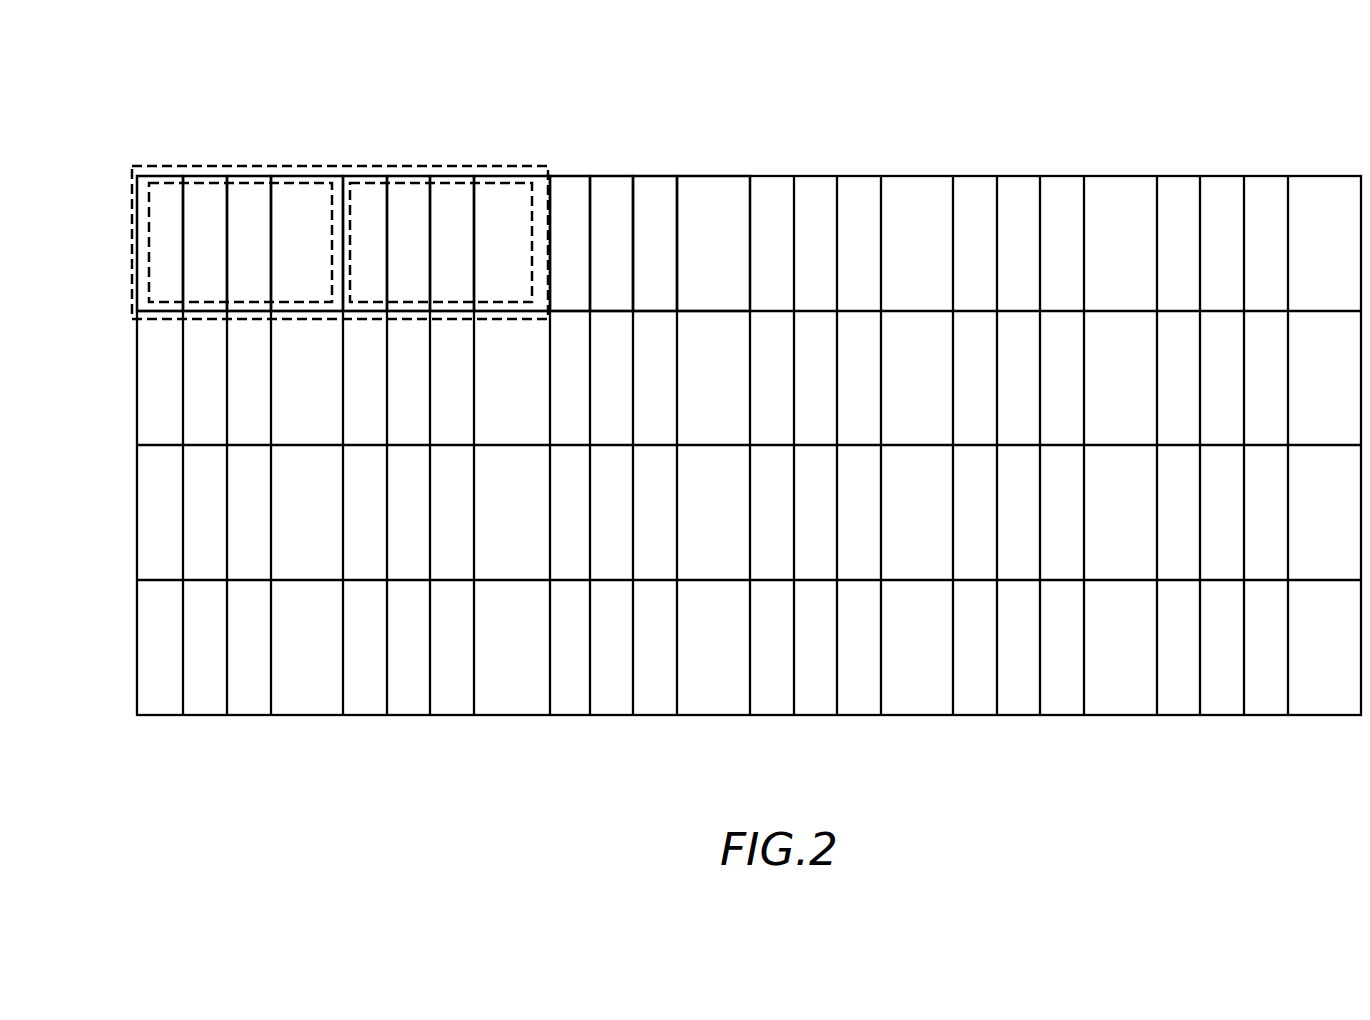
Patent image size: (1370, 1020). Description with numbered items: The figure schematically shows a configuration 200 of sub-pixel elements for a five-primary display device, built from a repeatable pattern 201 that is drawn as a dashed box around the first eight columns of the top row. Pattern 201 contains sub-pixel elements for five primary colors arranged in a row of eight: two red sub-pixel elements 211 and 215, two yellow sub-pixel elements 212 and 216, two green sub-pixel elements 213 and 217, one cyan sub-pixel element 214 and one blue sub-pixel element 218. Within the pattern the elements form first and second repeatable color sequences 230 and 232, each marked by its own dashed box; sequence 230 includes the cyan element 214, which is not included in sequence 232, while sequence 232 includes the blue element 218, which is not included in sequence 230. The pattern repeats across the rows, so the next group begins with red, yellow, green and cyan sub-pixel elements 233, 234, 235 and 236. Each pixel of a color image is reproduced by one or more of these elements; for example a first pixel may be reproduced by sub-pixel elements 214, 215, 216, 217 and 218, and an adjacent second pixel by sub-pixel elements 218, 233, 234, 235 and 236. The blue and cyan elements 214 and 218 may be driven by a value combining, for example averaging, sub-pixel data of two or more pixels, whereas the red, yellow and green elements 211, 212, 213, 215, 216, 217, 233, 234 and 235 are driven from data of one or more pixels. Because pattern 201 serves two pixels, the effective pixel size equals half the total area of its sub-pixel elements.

The configuration of sub-pixel elements 200 is at (298, 777).
The repeatable pattern 201 is at (132, 230).
The first repeatable color sequence 230 is at (313, 183).
The second repeatable color sequence 232 is at (522, 182).
The sub-pixel element 211 is at (157, 202).
The sub-pixel element 212 is at (202, 202).
The sub-pixel element 213 is at (242, 202).
The sub-pixel element 214 is at (288, 202).
The sub-pixel element 215 is at (358, 202).
The sub-pixel element 216 is at (403, 202).
The sub-pixel element 217 is at (443, 202).
The sub-pixel element 218 is at (493, 202).
The sub-pixel element 233 is at (562, 202).
The sub-pixel element 234 is at (607, 202).
The sub-pixel element 235 is at (648, 202).
The sub-pixel element 236 is at (717, 193).